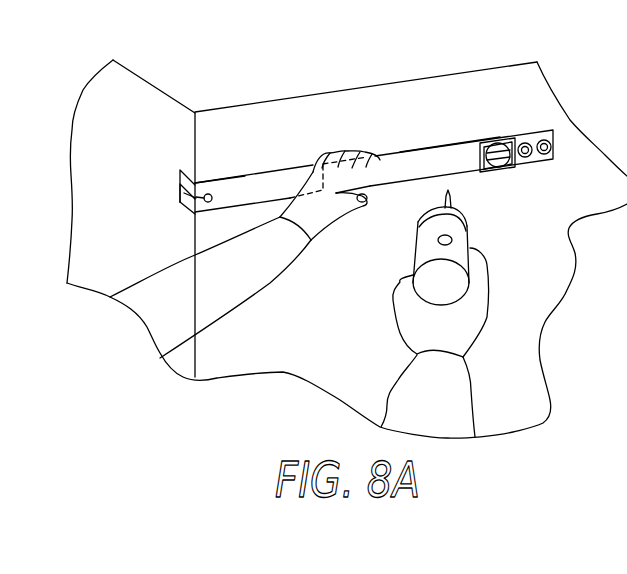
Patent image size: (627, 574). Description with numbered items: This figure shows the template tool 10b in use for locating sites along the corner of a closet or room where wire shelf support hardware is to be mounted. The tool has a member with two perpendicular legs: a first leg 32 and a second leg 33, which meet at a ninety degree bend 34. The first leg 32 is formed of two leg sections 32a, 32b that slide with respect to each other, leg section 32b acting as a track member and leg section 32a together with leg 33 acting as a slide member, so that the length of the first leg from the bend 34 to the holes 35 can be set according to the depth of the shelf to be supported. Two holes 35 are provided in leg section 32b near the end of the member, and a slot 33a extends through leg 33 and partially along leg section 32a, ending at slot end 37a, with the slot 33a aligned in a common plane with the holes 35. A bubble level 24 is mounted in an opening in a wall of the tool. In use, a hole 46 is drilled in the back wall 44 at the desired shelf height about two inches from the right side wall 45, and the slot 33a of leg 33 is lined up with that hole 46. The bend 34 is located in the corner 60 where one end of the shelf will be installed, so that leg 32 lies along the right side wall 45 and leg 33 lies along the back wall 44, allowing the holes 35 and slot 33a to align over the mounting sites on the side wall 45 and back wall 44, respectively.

The back wall 44 is at (165, 123).
The corner 60 is at (206, 152).
The right side wall 45 is at (303, 112).
The template tool 10b is at (407, 152).
The leg 32 is at (231, 211).
The leg section 32a is at (245, 185).
The leg section 32b is at (447, 146).
The bubble level 24 is at (498, 145).
The holes 35 is at (533, 159).
The leg 33 is at (183, 177).
The hole 46 is at (182, 187).
The slot 33a is at (186, 202).
The bend 34 is at (196, 195).
The end of slot 37a is at (212, 198).